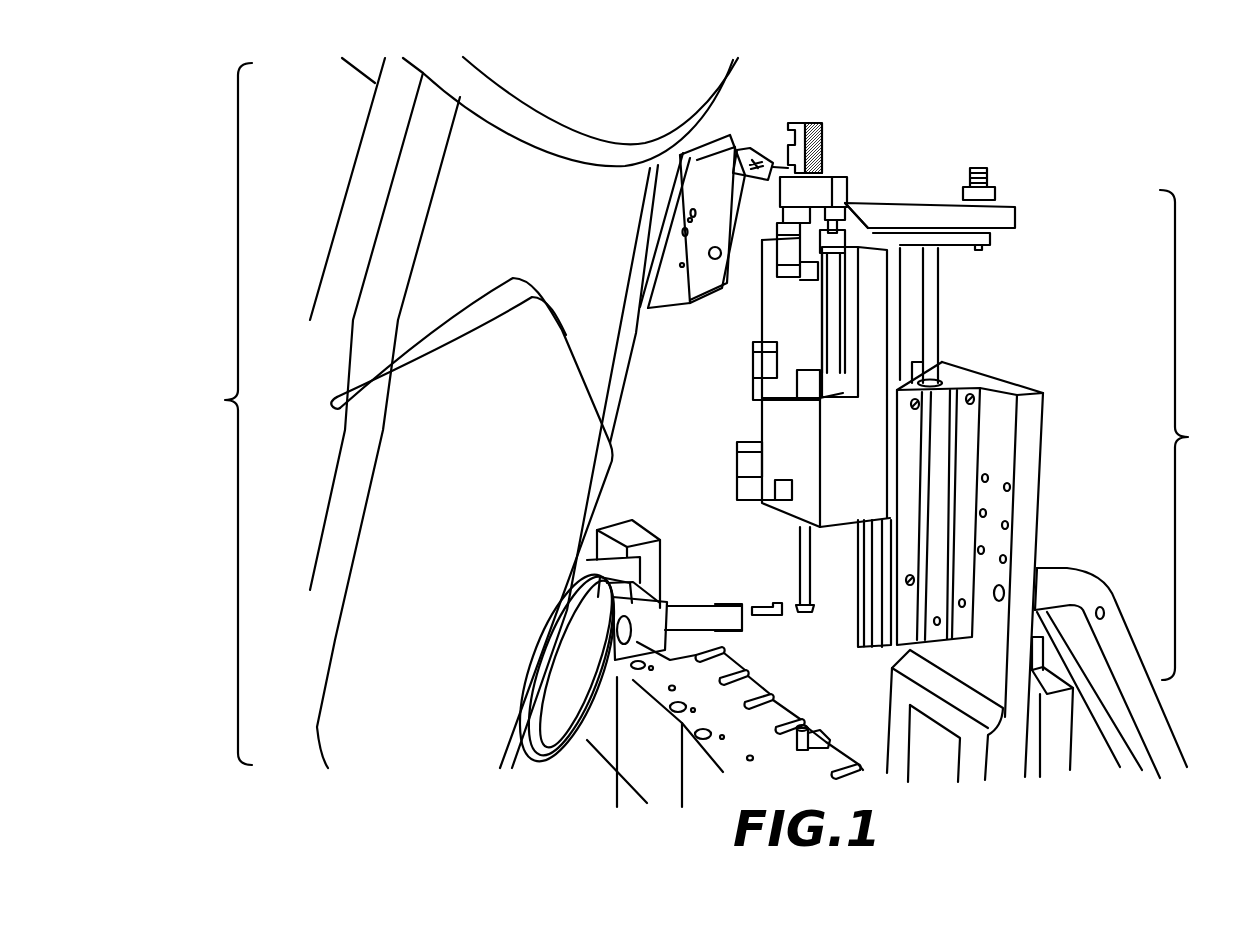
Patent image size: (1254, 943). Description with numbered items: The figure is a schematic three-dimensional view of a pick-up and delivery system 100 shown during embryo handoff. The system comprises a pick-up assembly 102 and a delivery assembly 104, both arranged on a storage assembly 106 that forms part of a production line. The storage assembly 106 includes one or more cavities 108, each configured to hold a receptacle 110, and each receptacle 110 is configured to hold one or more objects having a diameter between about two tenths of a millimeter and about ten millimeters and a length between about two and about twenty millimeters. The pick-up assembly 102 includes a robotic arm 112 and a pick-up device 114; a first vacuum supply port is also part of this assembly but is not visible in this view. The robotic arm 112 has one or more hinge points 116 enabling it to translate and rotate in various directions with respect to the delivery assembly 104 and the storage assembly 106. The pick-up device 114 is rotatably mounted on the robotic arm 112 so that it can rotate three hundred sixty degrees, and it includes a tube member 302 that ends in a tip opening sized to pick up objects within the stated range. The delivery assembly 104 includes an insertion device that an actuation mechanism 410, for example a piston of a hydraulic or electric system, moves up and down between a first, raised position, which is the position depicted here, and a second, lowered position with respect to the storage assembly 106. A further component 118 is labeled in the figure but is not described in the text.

The pick-up and delivery system 100 is at (1160, 88).
The pick-up assembly 102 is at (216, 414).
The delivery assembly 104 is at (1038, 475).
The storage assembly 106 is at (647, 767).
The cavities 108 is at (760, 687).
The receptacle 110 is at (807, 733).
The robotic arm 112 is at (506, 208).
The pick-up device 114 is at (685, 622).
The hinge points 116 is at (650, 102).
The rod 118 is at (767, 606).
The tube member 302 is at (747, 604).
The actuation mechanism 410 is at (932, 316).